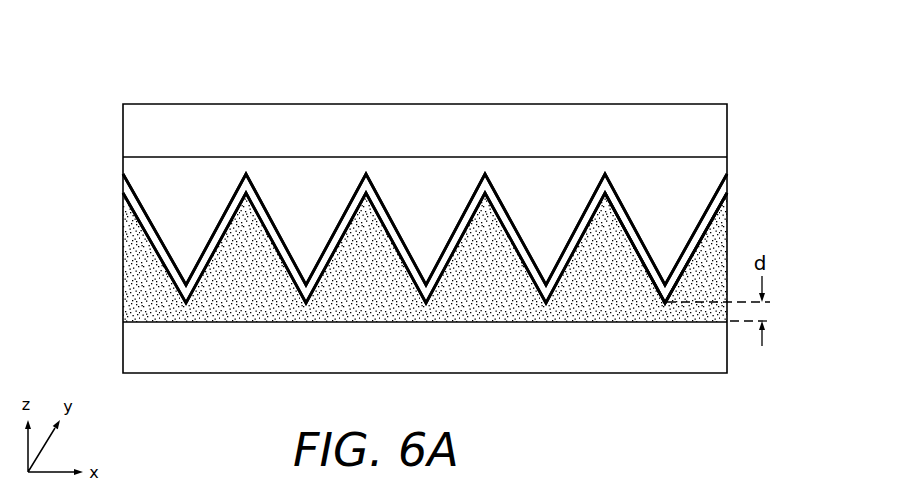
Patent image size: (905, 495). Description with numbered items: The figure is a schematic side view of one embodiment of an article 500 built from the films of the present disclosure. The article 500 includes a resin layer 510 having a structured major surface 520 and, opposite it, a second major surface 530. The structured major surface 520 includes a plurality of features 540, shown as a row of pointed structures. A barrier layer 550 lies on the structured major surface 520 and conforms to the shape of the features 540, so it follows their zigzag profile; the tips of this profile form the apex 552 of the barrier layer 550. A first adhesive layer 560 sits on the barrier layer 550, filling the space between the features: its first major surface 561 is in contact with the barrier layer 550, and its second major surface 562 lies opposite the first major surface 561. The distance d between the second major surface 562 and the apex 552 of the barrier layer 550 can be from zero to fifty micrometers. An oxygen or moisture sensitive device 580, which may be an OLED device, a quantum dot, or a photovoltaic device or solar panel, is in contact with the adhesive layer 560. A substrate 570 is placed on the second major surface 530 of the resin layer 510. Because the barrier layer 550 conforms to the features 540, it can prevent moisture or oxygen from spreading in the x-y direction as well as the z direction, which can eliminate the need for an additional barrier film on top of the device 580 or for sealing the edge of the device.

The article 500 is at (730, 56).
The resin layer 510 is at (698, 167).
The structured major surface 520 is at (705, 212).
The second major surface 530 is at (145, 157).
The features 540 is at (657, 238).
The barrier layer 550 is at (142, 215).
The apex of barrier layer 552 is at (662, 307).
The first adhesive layer 560 is at (147, 303).
The first major surface 561 is at (160, 248).
The second major surface 562 is at (702, 323).
The substrate 570 is at (142, 117).
The oxygen or moisture sensitive device 580 is at (145, 352).